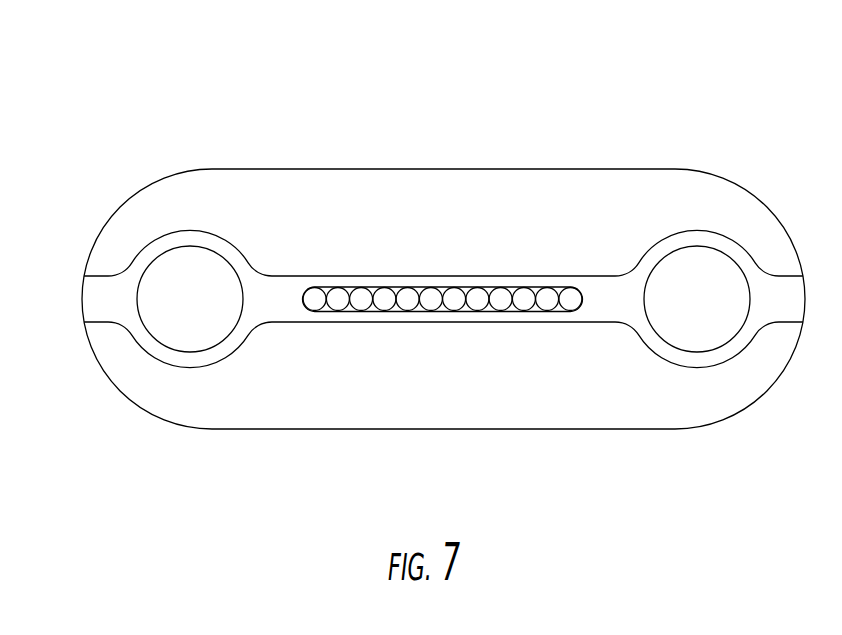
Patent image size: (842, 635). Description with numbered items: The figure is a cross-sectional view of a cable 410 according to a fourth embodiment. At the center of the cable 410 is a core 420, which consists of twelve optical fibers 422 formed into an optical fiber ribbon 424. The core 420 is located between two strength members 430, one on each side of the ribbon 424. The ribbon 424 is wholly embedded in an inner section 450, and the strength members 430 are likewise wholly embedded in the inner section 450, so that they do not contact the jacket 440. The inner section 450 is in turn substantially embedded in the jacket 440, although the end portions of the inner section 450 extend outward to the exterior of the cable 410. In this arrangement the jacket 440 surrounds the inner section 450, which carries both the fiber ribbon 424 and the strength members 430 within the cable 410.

The cable 410 is at (82, 106).
The core 420 is at (443, 300).
The optical fibers 422 is at (480, 300).
The optical fiber ribbon 424 is at (535, 313).
The strength members 430 is at (197, 335).
The jacket 440 is at (373, 188).
The inner section 450 is at (268, 315).